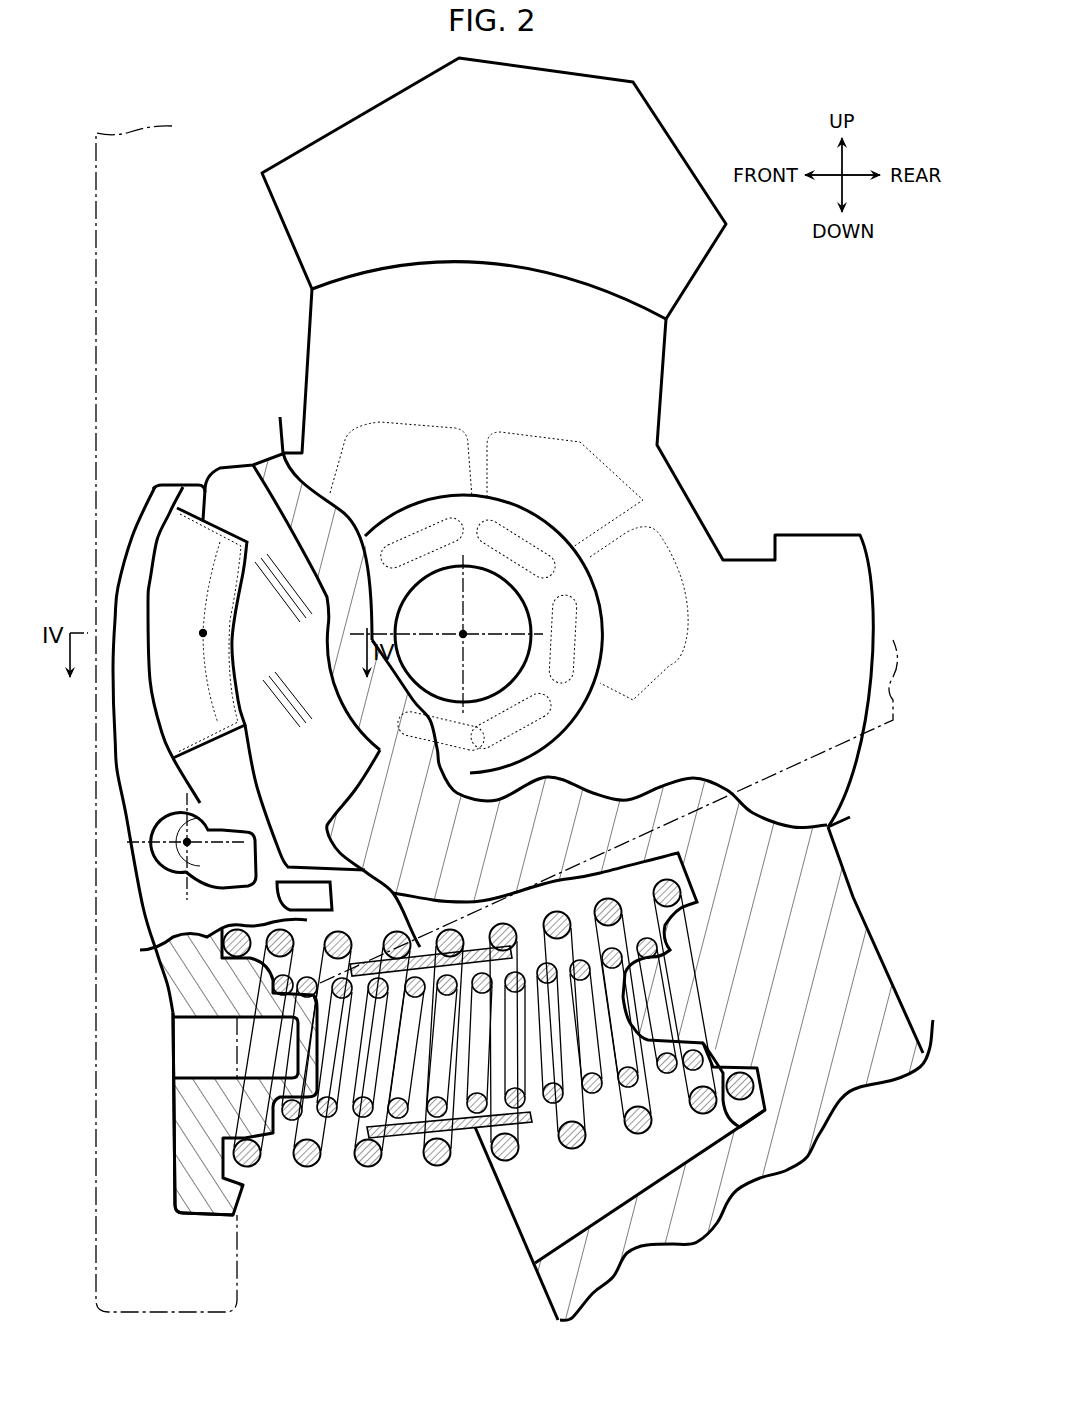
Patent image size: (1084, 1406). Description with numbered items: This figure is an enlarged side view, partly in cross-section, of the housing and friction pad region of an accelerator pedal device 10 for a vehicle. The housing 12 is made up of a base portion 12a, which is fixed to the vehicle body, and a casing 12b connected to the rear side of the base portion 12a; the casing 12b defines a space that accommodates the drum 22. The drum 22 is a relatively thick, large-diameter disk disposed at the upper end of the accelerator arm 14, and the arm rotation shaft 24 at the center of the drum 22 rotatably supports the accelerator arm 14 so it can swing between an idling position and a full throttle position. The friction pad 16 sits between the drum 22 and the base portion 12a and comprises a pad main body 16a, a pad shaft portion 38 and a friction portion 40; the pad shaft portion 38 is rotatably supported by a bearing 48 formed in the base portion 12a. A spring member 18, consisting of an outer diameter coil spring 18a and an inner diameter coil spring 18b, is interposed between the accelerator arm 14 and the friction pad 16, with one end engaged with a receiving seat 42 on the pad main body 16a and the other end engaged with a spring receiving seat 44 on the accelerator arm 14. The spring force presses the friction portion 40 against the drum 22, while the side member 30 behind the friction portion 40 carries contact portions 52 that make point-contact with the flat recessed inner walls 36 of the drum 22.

The accelerator pedal device 10 is at (850, 1205).
The housing 12 is at (528, 752).
The base portion 12a is at (170, 1313).
The casing 12b is at (793, 763).
The accelerator arm 14 is at (868, 903).
The friction pad 16 is at (187, 1070).
The pad main body 16a is at (170, 1112).
The spring member 18 is at (489, 1083).
The outer diameter coil spring 18a is at (445, 1163).
The inner diameter coil spring 18b is at (483, 1235).
The drum 22 is at (262, 410).
The arm rotation shaft 24 is at (533, 655).
The side member 30 is at (173, 593).
The recessed inner wall 36 is at (247, 512).
The pad shaft portion 38 is at (148, 873).
The friction portion 40 is at (157, 540).
The receiving seat 42 is at (283, 1137).
The spring receiving seat 44 is at (733, 1113).
The bearing 48 is at (148, 827).
The contact portion 52 is at (200, 633).